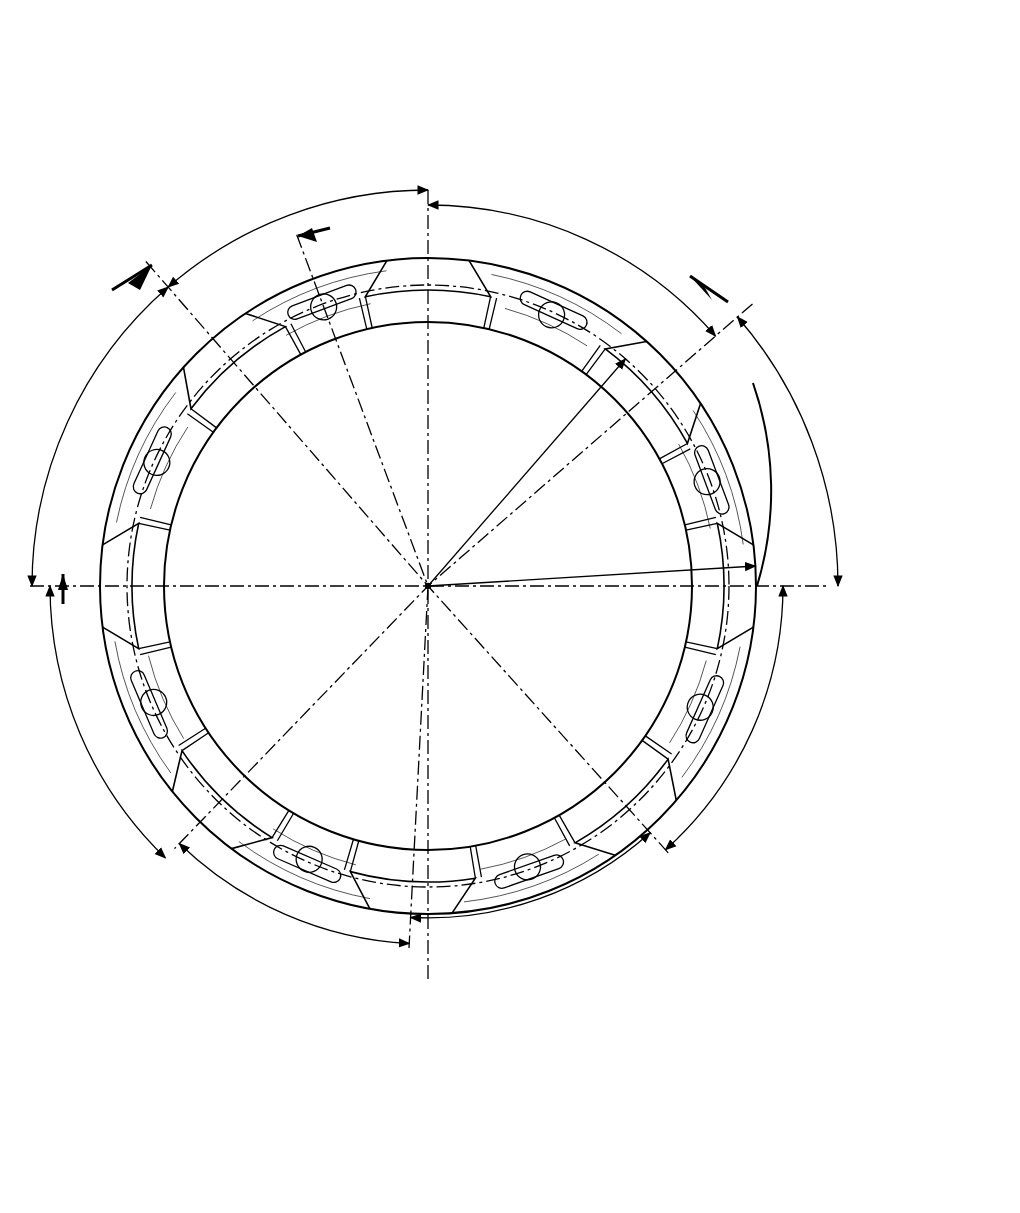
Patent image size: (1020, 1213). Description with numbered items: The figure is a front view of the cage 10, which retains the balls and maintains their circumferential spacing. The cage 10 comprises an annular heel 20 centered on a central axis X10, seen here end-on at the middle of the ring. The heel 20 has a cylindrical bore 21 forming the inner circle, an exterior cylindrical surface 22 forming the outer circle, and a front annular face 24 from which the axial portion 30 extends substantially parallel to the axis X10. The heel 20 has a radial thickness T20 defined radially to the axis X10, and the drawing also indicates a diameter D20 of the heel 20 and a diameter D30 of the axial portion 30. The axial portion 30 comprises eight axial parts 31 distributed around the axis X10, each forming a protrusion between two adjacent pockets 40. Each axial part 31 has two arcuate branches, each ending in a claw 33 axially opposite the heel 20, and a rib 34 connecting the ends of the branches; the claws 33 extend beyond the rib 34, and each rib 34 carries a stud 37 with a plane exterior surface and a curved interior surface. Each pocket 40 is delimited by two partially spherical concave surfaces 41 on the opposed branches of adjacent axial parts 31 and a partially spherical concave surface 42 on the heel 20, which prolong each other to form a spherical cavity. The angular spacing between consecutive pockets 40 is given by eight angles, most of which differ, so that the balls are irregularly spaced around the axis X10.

The cage 10 is at (150, 120).
The annular heel 20 is at (680, 392).
The cylindrical bore 21 is at (667, 474).
The exterior cylindrical surface 22 is at (722, 428).
The front annular face 24 is at (726, 453).
The axial portion 30 is at (493, 880).
The axial part 31 is at (380, 338).
The claw 33 is at (280, 818).
The rib 34 is at (337, 845).
The stud 37 is at (305, 848).
The pocket 40 is at (445, 302).
The partially spherical concave surface 41 is at (657, 758).
The partially spherical concave surface 42 is at (633, 787).
The radial thickness T20 is at (733, 509).
The diameter of axial portion D30 is at (527, 472).
The diameter of heel D20 is at (592, 564).
The central axis X10 is at (404, 599).